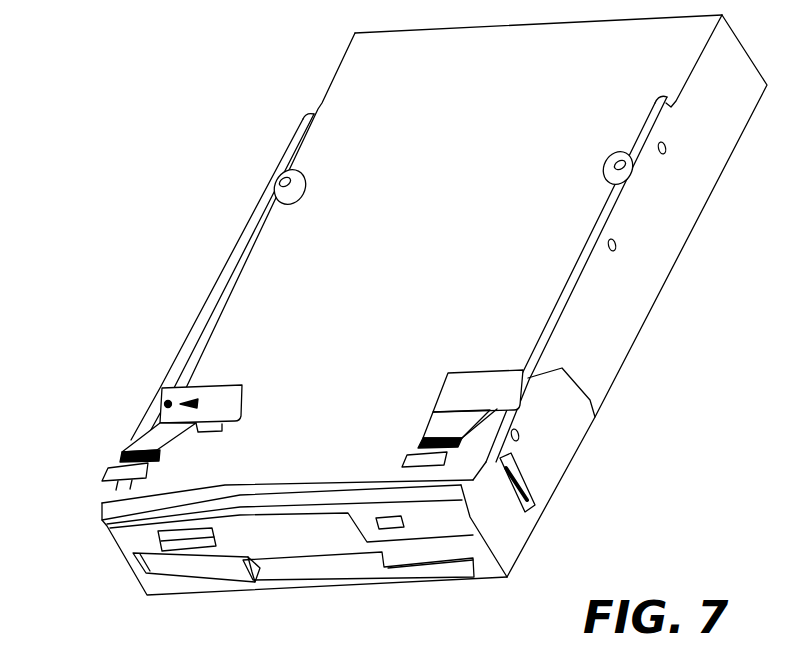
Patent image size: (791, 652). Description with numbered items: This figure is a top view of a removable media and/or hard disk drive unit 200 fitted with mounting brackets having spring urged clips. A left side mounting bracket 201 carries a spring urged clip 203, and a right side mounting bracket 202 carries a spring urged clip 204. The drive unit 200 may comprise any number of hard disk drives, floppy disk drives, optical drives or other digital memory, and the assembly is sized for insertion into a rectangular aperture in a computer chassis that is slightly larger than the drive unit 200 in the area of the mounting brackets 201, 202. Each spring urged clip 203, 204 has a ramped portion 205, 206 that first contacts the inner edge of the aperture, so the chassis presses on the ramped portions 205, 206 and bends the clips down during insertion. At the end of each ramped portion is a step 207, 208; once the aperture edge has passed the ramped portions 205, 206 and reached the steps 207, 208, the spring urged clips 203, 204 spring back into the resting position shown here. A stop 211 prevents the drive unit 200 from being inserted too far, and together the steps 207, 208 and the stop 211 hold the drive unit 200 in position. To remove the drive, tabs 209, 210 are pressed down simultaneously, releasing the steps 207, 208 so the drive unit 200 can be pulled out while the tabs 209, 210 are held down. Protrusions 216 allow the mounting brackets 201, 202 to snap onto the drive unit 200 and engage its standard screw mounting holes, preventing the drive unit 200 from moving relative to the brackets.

The drive unit 200 is at (389, 260).
The left side mounting bracket 201 is at (152, 402).
The right side mounting bracket 202 is at (577, 462).
The spring urged clip 203 is at (202, 445).
The spring urged clip 204 is at (410, 426).
The ramped portion 205 is at (237, 420).
The ramped portion 206 is at (456, 374).
The step 207 is at (172, 458).
The step 208 is at (432, 418).
The tab 209 is at (108, 466).
The tab 210 is at (410, 458).
The stop 211 is at (530, 508).
The protrusions 216 is at (202, 390).